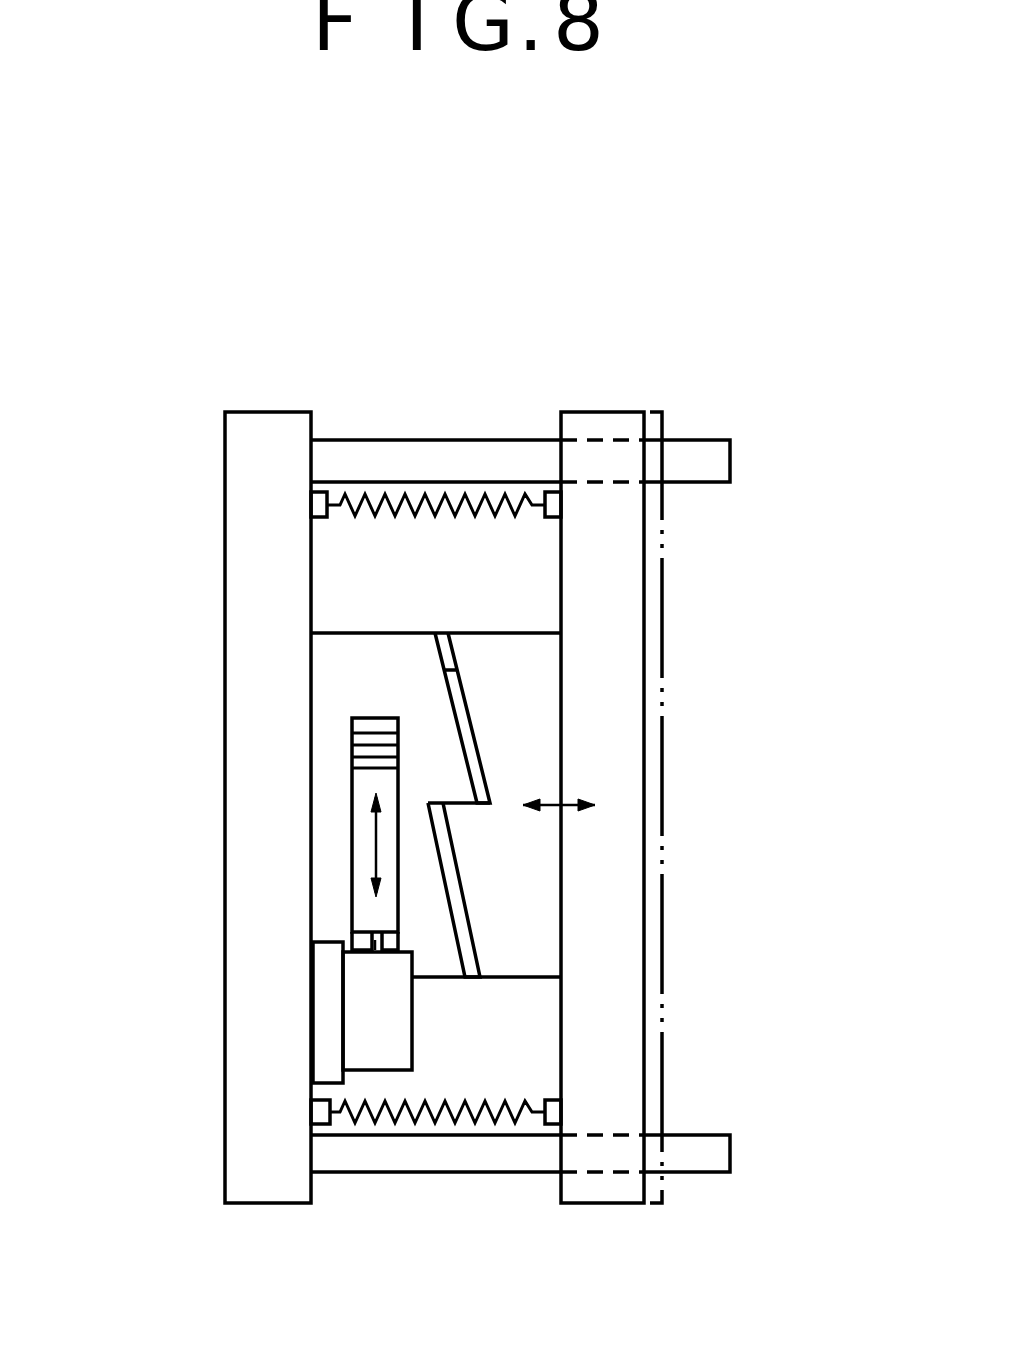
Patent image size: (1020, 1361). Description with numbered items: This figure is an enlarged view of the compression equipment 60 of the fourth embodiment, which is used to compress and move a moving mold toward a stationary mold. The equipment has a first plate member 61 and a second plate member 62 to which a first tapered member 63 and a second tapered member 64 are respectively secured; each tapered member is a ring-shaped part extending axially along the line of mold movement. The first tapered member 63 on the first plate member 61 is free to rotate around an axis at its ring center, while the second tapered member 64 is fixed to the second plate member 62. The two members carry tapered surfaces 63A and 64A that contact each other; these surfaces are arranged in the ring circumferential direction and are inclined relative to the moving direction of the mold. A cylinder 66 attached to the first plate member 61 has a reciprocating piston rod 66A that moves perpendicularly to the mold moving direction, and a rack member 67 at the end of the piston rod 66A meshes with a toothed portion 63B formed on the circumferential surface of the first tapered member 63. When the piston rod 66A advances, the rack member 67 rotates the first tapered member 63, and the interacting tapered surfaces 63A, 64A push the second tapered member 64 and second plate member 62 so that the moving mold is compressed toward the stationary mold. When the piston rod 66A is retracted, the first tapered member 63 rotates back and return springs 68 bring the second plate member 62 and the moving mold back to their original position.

The compression equipment 60 is at (452, 324).
The first plate member 61 is at (265, 1175).
The second plate member 62 is at (615, 1190).
The first tapered member 63 is at (335, 683).
The tapered surface 63A is at (455, 668).
The toothed portion 63B is at (350, 738).
The second tapered member 64 is at (535, 678).
The tapered surface 64A is at (462, 731).
The cylinder 66 is at (393, 1046).
The piston rod 66A is at (375, 952).
The rack member 67 is at (350, 835).
The return spring 68 is at (406, 505).